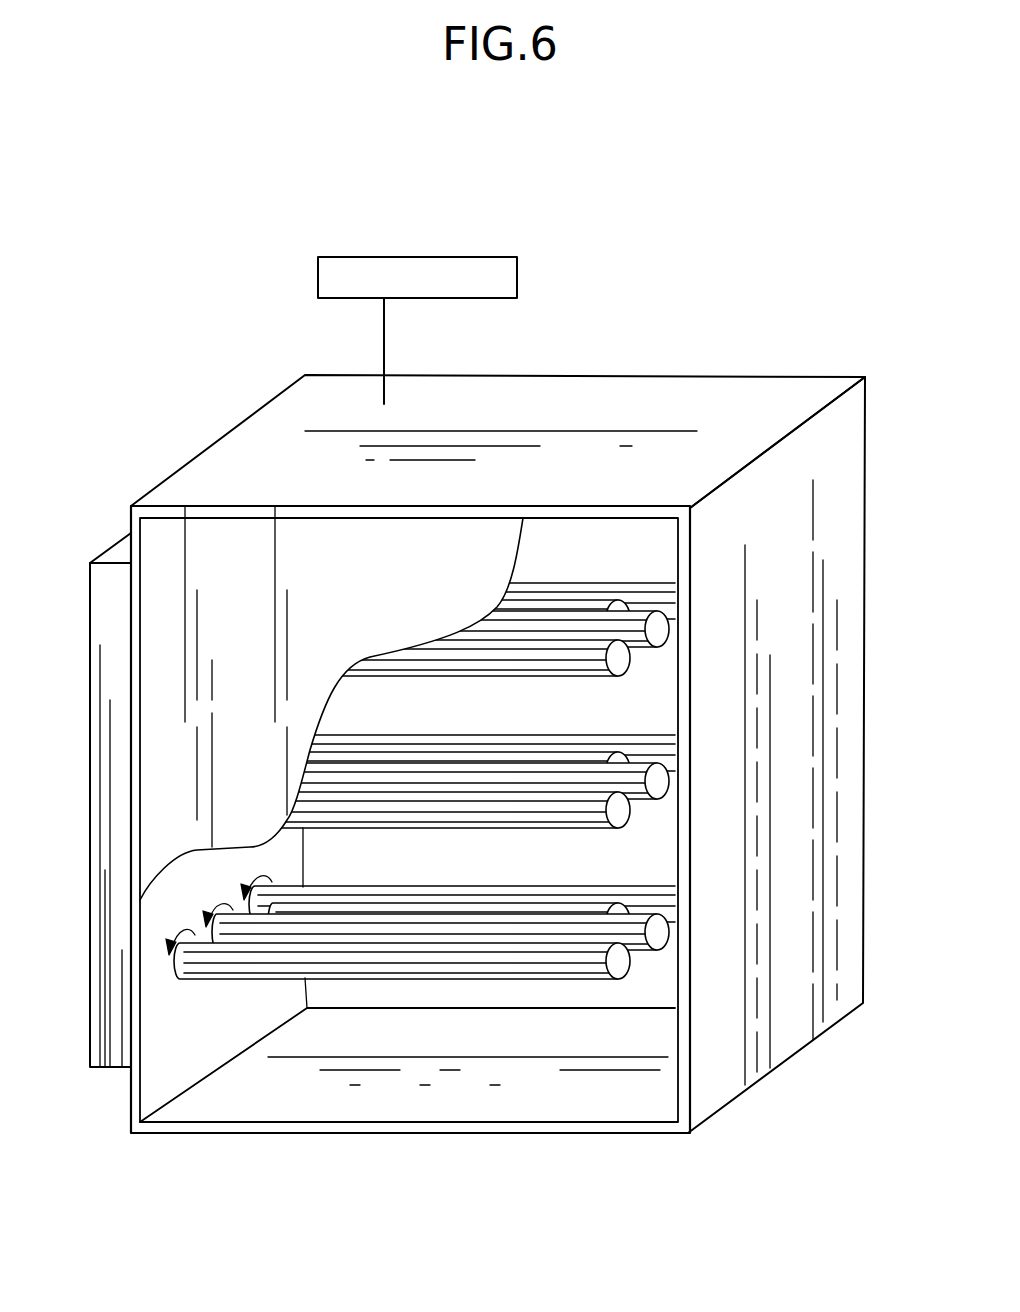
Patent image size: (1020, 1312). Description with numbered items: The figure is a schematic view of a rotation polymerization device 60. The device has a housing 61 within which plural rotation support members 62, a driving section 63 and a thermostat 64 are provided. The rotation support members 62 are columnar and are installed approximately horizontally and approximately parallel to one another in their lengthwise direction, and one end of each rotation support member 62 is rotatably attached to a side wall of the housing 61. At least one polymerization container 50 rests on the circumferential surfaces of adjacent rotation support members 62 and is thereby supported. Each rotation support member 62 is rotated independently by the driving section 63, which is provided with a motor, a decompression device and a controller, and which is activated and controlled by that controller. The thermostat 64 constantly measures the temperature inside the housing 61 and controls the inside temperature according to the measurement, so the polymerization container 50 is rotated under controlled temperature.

The rotation polymerization device 60 is at (604, 199).
The housing 61 is at (680, 404).
The rotation support members 62 is at (228, 933).
The driving section 63 is at (103, 547).
The thermostat 64 is at (517, 273).
The polymerization container 50 is at (452, 908).